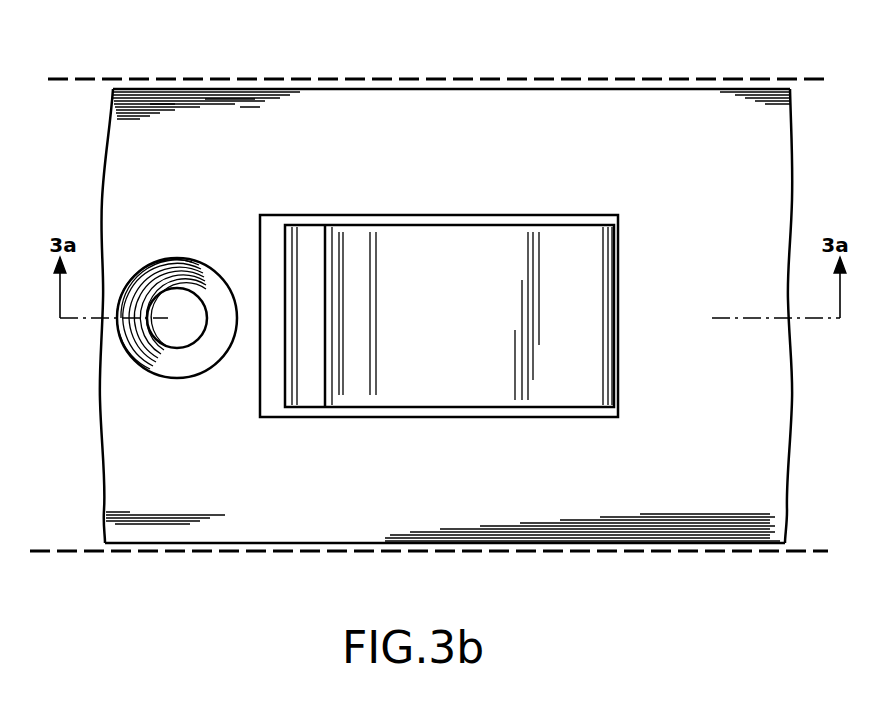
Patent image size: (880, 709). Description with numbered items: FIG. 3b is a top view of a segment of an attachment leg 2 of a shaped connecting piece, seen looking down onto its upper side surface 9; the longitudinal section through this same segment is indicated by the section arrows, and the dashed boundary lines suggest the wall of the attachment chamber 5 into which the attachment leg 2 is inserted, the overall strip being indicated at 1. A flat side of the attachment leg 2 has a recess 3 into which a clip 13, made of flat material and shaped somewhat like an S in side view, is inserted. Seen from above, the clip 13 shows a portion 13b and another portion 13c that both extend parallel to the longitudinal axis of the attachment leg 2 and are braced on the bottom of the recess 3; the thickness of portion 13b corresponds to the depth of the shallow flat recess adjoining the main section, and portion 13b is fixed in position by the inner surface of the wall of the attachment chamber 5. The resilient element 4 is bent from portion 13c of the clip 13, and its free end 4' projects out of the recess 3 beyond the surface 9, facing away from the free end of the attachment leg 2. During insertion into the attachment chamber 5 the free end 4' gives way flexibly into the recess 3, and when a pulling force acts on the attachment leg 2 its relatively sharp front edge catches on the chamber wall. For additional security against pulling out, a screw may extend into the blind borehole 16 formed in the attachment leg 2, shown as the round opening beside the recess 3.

The web strip 1 is at (735, 79).
The attachment leg 2 is at (205, 100).
The recess 3 is at (400, 228).
The resilient element 4 is at (413, 316).
The free end 4' is at (340, 316).
The attachment chamber 5 is at (822, 550).
The upper side surface 9 is at (633, 152).
The clip 13 is at (460, 250).
The portion of the clip 13b is at (603, 291).
The portion of the clip 13c is at (353, 237).
The blind borehole 16 is at (197, 263).